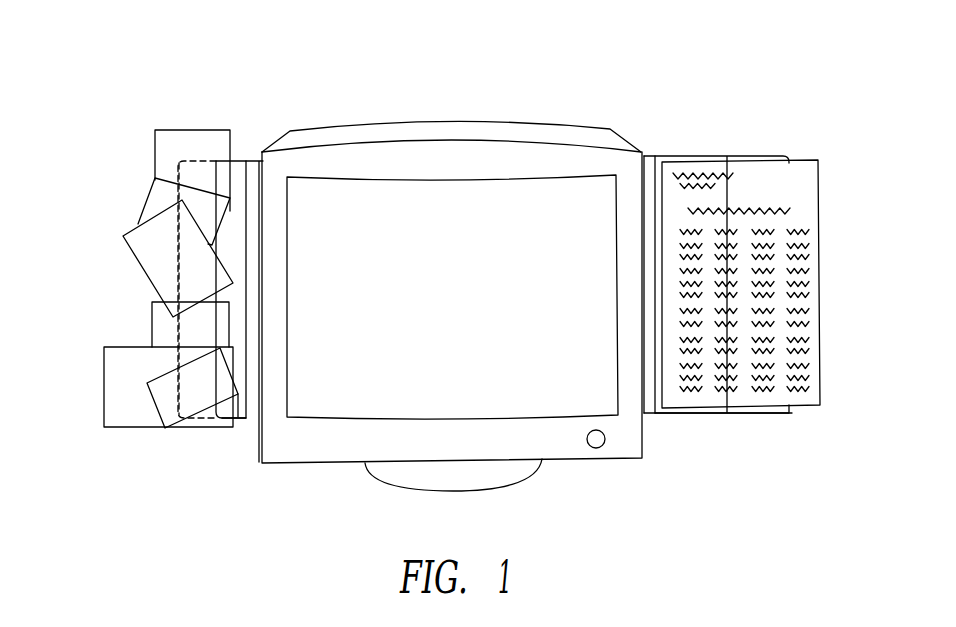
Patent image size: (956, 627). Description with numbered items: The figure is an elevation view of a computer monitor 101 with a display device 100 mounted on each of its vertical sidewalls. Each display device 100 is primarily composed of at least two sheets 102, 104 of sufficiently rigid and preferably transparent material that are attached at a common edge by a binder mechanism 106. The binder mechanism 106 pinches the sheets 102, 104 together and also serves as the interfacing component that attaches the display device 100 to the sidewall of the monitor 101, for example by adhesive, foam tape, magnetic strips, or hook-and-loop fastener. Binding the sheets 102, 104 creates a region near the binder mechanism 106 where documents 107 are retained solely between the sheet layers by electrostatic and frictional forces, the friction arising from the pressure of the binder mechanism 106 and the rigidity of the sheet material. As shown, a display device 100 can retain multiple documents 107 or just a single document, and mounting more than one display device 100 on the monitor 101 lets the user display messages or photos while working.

The display device 100 is at (186, 77).
The computer monitor 101 is at (450, 121).
The sheet 102 is at (244, 420).
The sheet 104 is at (200, 420).
The binder mechanism 106 is at (253, 158).
The documents 107 is at (155, 156).